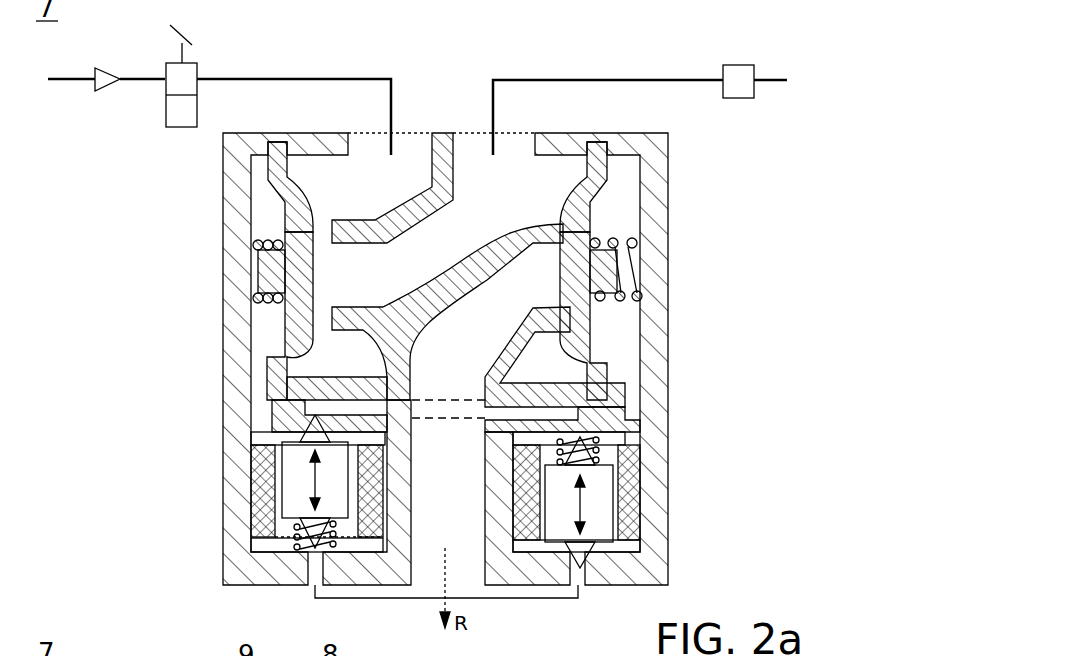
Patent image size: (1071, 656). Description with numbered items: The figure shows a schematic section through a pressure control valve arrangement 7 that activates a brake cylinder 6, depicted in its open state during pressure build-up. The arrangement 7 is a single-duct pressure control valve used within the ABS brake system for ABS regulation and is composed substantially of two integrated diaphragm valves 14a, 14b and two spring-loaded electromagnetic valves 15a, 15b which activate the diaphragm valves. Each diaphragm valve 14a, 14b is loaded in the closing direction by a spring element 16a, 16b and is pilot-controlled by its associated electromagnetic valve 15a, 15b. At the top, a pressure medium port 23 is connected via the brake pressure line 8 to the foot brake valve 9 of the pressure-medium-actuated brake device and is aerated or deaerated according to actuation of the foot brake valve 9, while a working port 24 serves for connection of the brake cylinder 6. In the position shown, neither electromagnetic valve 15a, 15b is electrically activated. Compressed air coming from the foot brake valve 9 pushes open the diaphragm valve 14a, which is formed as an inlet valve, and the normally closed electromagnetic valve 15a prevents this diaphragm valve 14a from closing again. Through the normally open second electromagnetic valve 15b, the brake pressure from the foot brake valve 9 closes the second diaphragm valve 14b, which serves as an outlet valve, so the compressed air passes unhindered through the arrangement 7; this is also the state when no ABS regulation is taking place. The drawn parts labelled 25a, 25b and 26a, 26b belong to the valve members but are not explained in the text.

The pressure control valve arrangement 7 is at (84, 79).
The brake pressure line 8 is at (267, 80).
The foot brake valve 9 is at (182, 78).
The brake cylinder 6 is at (730, 83).
The pressure medium port 23 is at (420, 118).
The working port 24 is at (466, 118).
The first valve stem 25a is at (292, 218).
The second valve stem 25b is at (590, 206).
The diaphragm valve 14a is at (284, 322).
The second diaphragm valve 14b is at (612, 322).
The spring element 16a is at (262, 298).
The spring element 16b is at (638, 245).
The first seal carrier 26a is at (264, 317).
The second seal carrier 26b is at (622, 312).
The electromagnetic valve 15a is at (303, 477).
The second electromagnetic valve 15b is at (584, 490).